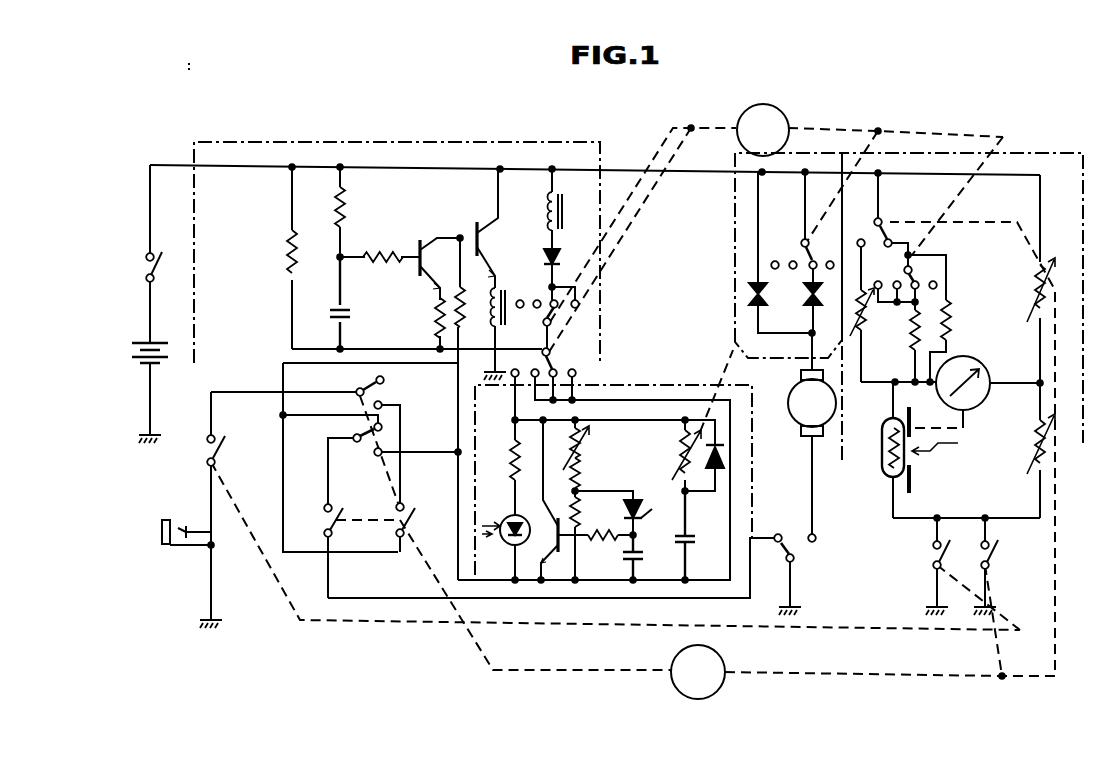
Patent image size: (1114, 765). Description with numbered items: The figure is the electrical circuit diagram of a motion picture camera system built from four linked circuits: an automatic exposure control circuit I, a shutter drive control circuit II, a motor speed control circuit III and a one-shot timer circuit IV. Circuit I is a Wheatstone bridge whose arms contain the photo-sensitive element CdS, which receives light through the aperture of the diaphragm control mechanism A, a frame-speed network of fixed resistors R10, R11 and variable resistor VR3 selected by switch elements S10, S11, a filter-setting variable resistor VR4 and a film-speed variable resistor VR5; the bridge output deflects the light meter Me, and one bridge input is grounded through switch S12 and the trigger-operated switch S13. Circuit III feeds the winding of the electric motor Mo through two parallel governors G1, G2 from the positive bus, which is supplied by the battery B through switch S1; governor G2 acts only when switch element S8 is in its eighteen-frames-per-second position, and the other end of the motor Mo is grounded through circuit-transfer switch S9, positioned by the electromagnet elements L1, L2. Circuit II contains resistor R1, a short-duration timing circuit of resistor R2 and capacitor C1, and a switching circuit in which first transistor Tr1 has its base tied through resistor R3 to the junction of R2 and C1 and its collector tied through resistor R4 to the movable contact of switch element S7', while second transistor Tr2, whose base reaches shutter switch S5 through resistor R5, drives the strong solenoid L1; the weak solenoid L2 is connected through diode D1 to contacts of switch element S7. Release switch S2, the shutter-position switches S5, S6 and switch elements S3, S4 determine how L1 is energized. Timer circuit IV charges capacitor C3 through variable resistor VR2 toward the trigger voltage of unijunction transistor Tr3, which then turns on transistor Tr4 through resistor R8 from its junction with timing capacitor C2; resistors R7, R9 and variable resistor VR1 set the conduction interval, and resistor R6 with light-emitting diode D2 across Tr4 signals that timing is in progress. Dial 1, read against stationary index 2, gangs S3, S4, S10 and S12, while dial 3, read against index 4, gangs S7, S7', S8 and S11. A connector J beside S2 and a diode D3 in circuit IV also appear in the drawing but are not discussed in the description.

The automatic exposure control circuit I is at (1010, 155).
The shutter drive control circuit II is at (343, 143).
The motor speed control circuit III is at (817, 153).
The one-shot control or timer circuit IV is at (627, 392).
The dial 1 is at (724, 667).
The stationary index 2 is at (713, 648).
The dial 3 is at (778, 87).
The stationary index 4 is at (788, 120).
The switch S1 is at (143, 270).
The manually operable release switch S2 is at (208, 454).
The switch element S3 is at (392, 398).
The switch element S4 is at (392, 434).
The first automatically operated switch S5 is at (324, 512).
The switch S6 is at (410, 506).
The switch element S7 is at (545, 317).
The switch element S7' is at (570, 379).
The switch element S8 is at (803, 244).
The circuit-transfer switch S9 is at (796, 560).
The switch element S10 is at (879, 220).
The switch element S11 is at (918, 283).
The switch S12 is at (932, 564).
The switch S13 is at (990, 562).
The battery B is at (132, 348).
The jack J is at (184, 550).
The resistor R1 is at (288, 257).
The resistor R2 is at (346, 211).
The resistor R3 is at (378, 255).
The resistor R4 is at (436, 322).
The resistor R5 is at (464, 312).
The resistor R6 is at (512, 460).
The resistor R7 is at (581, 478).
The resistor R8 is at (604, 540).
The resistor R9 is at (581, 517).
The fixed resistor R10 is at (912, 361).
The fixed resistor R11 is at (946, 326).
The variable resistor VR1 is at (581, 447).
The variable resistor VR2 is at (682, 460).
The variable resistor VR3 is at (869, 331).
The third variable resistor VR4 is at (1030, 282).
The fourth variable resistor VR5 is at (1028, 458).
The capacitor C1 is at (342, 308).
The timing capacitor C2 is at (636, 560).
The capacitor C3 is at (684, 550).
The first transistor Tr1 is at (422, 246).
The second transistor Tr2 is at (478, 227).
The unijunction transistor Tr3 is at (642, 520).
The transistor Tr4 is at (538, 512).
The solenoid L1 is at (490, 324).
The second solenoid L2 is at (548, 213).
The diode D1 is at (546, 258).
The light-emitting diode D2 is at (505, 548).
The diode D3 is at (715, 488).
The mechanical-to-electrical governor G1 is at (751, 289).
The second mechanical-to-electrical governor G2 is at (806, 298).
The electric motor Mo is at (796, 414).
The light meter Me is at (979, 359).
The photo-sensitive element CdS is at (884, 460).
The diaphragm control mechanism A is at (912, 480).